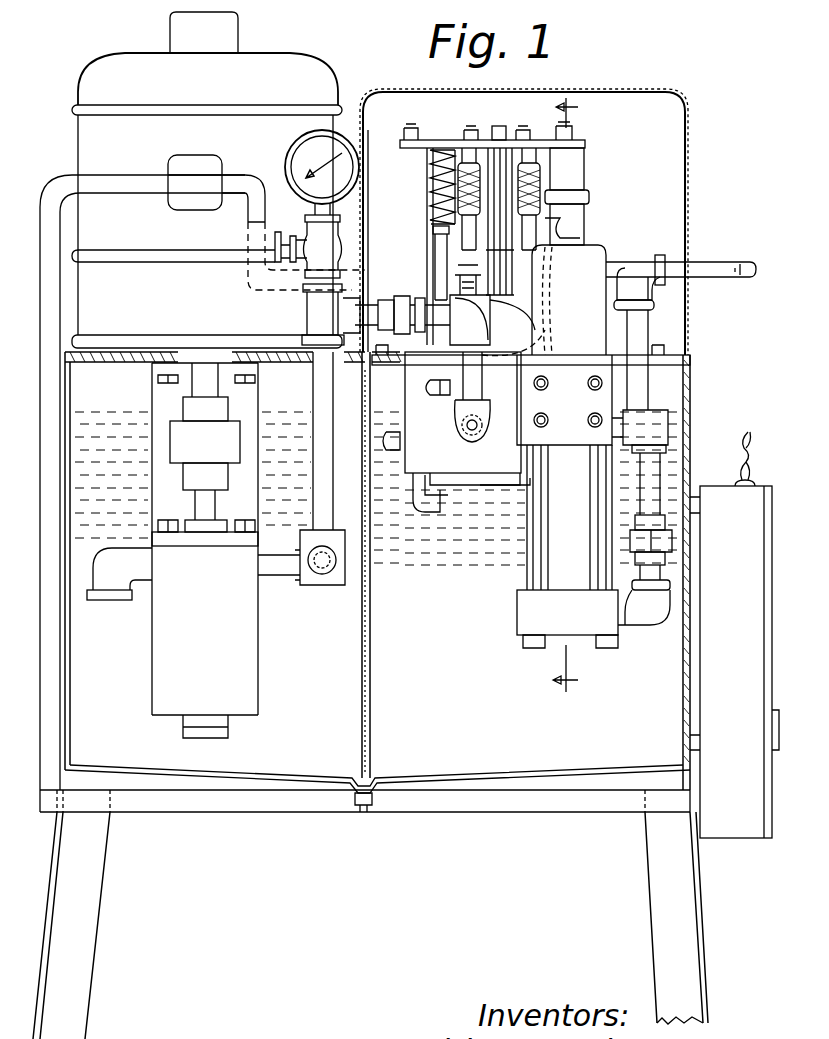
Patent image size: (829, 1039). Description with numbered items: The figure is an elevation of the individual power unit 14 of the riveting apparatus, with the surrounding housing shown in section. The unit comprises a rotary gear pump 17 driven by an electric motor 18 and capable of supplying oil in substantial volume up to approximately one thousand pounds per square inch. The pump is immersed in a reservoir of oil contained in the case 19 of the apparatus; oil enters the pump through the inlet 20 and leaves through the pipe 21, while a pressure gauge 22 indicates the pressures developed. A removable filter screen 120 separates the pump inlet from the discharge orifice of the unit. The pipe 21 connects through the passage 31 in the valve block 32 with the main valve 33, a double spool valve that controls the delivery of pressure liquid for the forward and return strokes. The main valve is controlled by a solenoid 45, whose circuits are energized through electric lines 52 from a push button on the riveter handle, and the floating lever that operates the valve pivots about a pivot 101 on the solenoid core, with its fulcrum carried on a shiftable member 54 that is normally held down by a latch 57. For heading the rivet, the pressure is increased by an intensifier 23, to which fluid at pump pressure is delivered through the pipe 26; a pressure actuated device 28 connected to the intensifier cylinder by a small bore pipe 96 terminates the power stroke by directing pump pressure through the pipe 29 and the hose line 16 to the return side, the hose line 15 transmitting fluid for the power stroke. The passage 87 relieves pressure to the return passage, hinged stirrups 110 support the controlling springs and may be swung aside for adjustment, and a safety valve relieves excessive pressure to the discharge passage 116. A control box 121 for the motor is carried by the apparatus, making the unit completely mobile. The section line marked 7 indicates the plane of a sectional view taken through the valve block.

The section line 7- 7 is at (573, 395).
The power unit 14 is at (665, 138).
The flexible hose line 15 is at (706, 266).
The flexible hose line 16 is at (745, 274).
The rotary gear pump 17 is at (240, 620).
The electric motor 18 is at (88, 128).
The case 19 is at (65, 640).
The inlet 20 is at (118, 600).
The pipe 21 is at (312, 382).
The pressure gauge 22 is at (306, 148).
The intensifier 23 is at (553, 573).
The pipe 26 is at (650, 590).
The pressure actuated device 28 is at (448, 131).
The pipe 29 is at (648, 320).
The passage 31 is at (470, 432).
The valve block 32 is at (474, 475).
The main valve 33 is at (504, 119).
The solenoid 45 is at (470, 156).
The electric lines 52 is at (750, 438).
The shiftable member 54 is at (506, 132).
The latch 57 is at (470, 320).
The passage 87 is at (398, 440).
The small bore pipe 96 is at (513, 353).
The pivot 101 is at (476, 280).
The hinged stirrups 110 is at (586, 196).
The discharge passage 116 is at (470, 271).
The removable filter screen 120 is at (372, 700).
The control box 121 is at (734, 662).